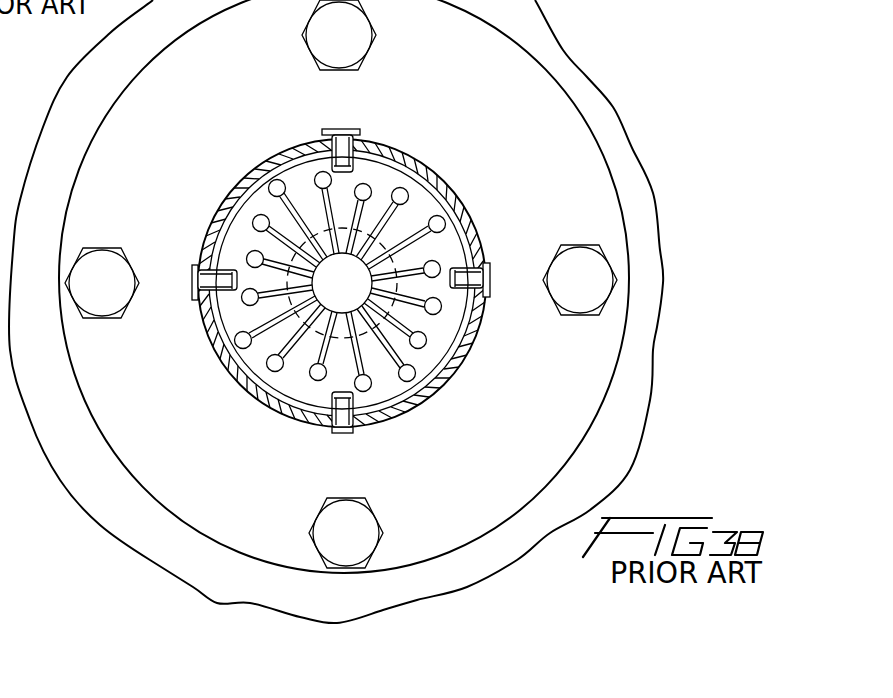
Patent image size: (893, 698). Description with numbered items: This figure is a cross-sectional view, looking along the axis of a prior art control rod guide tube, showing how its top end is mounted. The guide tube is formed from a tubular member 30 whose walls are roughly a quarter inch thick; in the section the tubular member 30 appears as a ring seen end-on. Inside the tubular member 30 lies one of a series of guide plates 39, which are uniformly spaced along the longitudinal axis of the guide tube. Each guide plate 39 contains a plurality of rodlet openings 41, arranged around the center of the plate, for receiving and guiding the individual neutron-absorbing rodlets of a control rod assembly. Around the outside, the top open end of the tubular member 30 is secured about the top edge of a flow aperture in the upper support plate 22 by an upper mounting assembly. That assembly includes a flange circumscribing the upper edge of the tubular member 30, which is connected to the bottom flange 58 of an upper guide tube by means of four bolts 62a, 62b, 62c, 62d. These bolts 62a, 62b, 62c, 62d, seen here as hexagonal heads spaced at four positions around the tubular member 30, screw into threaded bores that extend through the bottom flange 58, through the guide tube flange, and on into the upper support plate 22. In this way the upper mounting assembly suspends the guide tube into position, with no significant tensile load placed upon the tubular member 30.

The upper support plate 22 is at (606, 128).
The tubular member 30 is at (457, 192).
The guide plates 39 is at (435, 325).
The rodlet openings 41 is at (275, 371).
The bottom flange 58 is at (462, 455).
The bolt 62a is at (83, 293).
The bolt 62b is at (327, 543).
The bolt 62c is at (561, 290).
The bolt 62d is at (320, 45).